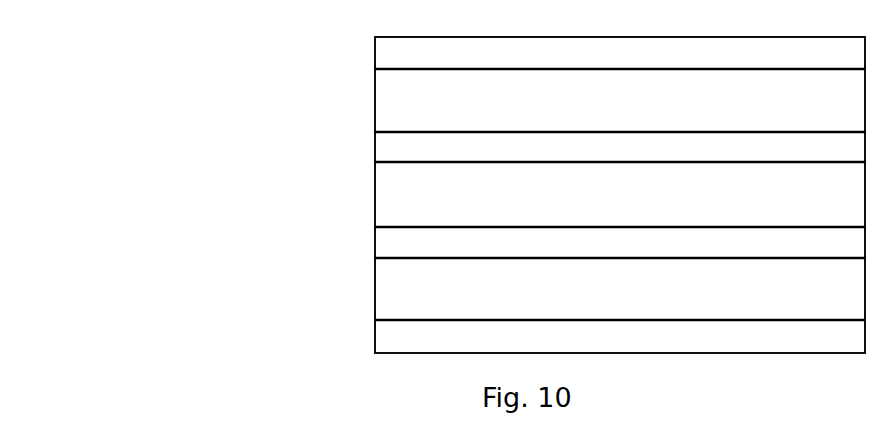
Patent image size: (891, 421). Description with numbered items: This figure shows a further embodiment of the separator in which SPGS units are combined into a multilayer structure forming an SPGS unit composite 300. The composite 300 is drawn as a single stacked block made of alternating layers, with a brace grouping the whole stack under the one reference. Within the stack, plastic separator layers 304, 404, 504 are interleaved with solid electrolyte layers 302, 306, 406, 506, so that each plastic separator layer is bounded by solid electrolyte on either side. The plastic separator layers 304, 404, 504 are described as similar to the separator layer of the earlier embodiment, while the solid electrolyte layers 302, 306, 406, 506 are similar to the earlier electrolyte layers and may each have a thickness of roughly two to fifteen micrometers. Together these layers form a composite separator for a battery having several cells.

The SPGS unit composite 300 is at (198, 375).
The solid electrolyte layer 302 is at (418, 54).
The plastic separator layer 304 is at (418, 99).
The solid electrolyte layer 306 is at (415, 143).
The plastic separator layer 404 is at (415, 186).
The solid electrolyte layer 406 is at (395, 248).
The plastic separator layer 504 is at (395, 293).
The solid electrolyte layer 506 is at (390, 338).